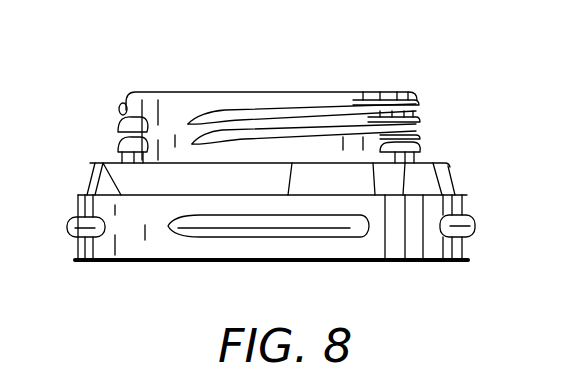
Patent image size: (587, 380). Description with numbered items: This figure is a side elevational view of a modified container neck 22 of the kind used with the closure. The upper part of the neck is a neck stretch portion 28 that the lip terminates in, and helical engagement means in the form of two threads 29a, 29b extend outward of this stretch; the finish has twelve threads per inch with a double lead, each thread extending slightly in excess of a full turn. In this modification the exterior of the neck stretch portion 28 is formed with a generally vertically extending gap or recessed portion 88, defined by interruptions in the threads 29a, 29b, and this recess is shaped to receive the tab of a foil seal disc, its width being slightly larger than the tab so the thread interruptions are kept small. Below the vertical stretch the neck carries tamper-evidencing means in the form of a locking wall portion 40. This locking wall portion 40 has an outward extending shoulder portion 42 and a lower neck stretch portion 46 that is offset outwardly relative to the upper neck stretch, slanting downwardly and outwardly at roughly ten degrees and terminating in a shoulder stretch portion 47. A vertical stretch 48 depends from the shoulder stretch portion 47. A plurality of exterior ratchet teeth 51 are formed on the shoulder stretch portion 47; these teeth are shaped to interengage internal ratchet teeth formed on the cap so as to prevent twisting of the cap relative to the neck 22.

The container neck 22 is at (379, 70).
The neck stretch portion 28 is at (295, 103).
The thread 29a is at (420, 101).
The thread 29b is at (420, 127).
The locking wall portion 40 is at (170, 187).
The shoulder portion 42 is at (118, 136).
The lower neck stretch portion 46 is at (460, 199).
The shoulder stretch portion 47 is at (97, 166).
The vertical stretch 48 is at (395, 240).
The ratchet teeth 51 is at (430, 186).
The recessed portion 88 is at (170, 137).